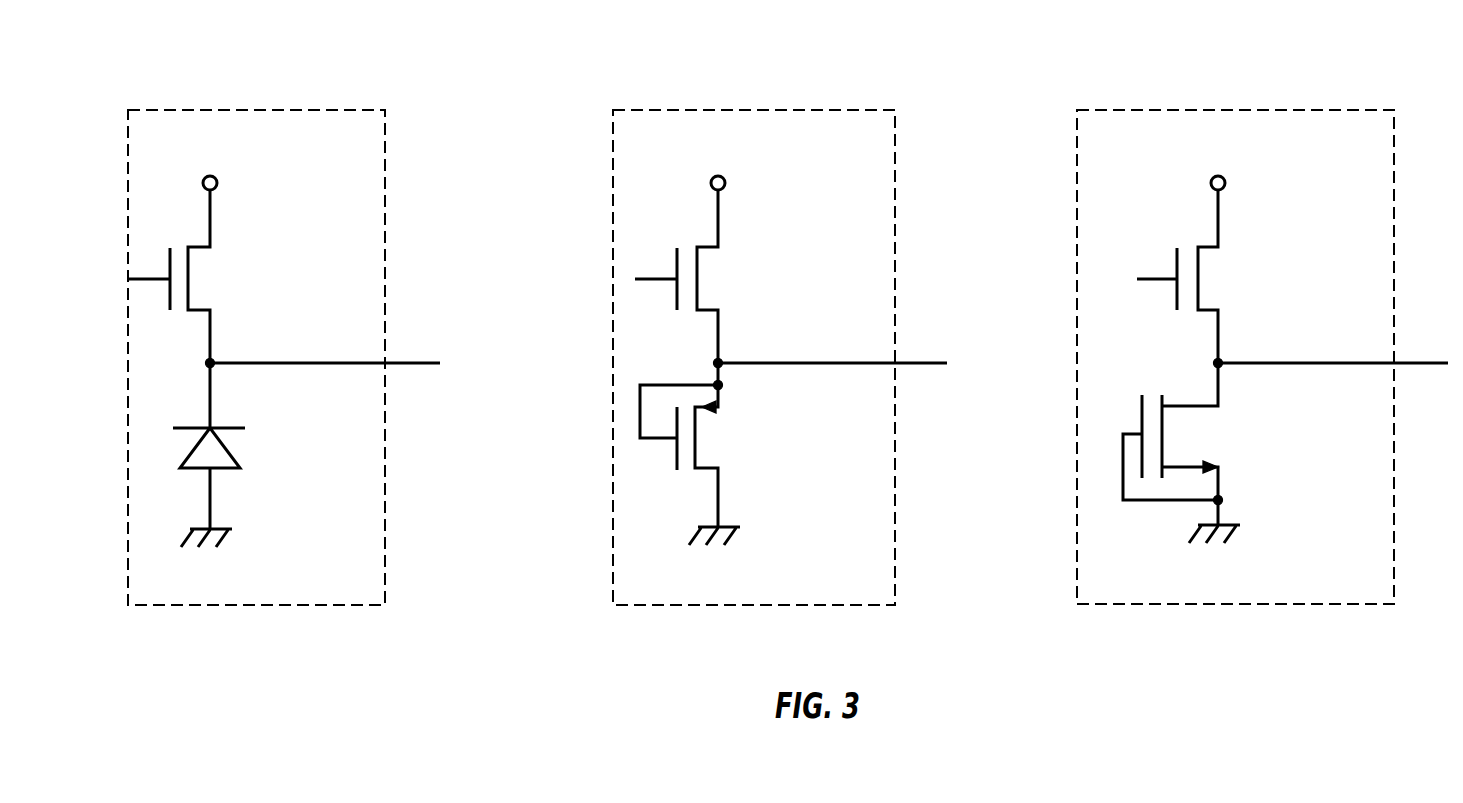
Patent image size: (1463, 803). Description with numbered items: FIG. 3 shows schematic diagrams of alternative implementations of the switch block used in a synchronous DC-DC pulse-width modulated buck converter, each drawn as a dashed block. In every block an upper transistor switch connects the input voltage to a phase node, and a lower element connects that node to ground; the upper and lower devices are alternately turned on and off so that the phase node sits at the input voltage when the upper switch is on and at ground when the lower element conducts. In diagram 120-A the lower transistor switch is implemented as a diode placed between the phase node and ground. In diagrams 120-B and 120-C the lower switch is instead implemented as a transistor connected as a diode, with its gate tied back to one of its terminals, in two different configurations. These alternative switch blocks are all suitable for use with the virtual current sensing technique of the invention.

The switch block diagram with diode 120-A is at (305, 108).
The switch block diagram with diode-connected transistor 120-B is at (817, 108).
The switch block diagram with diode-connected transistor 120-C is at (1328, 108).